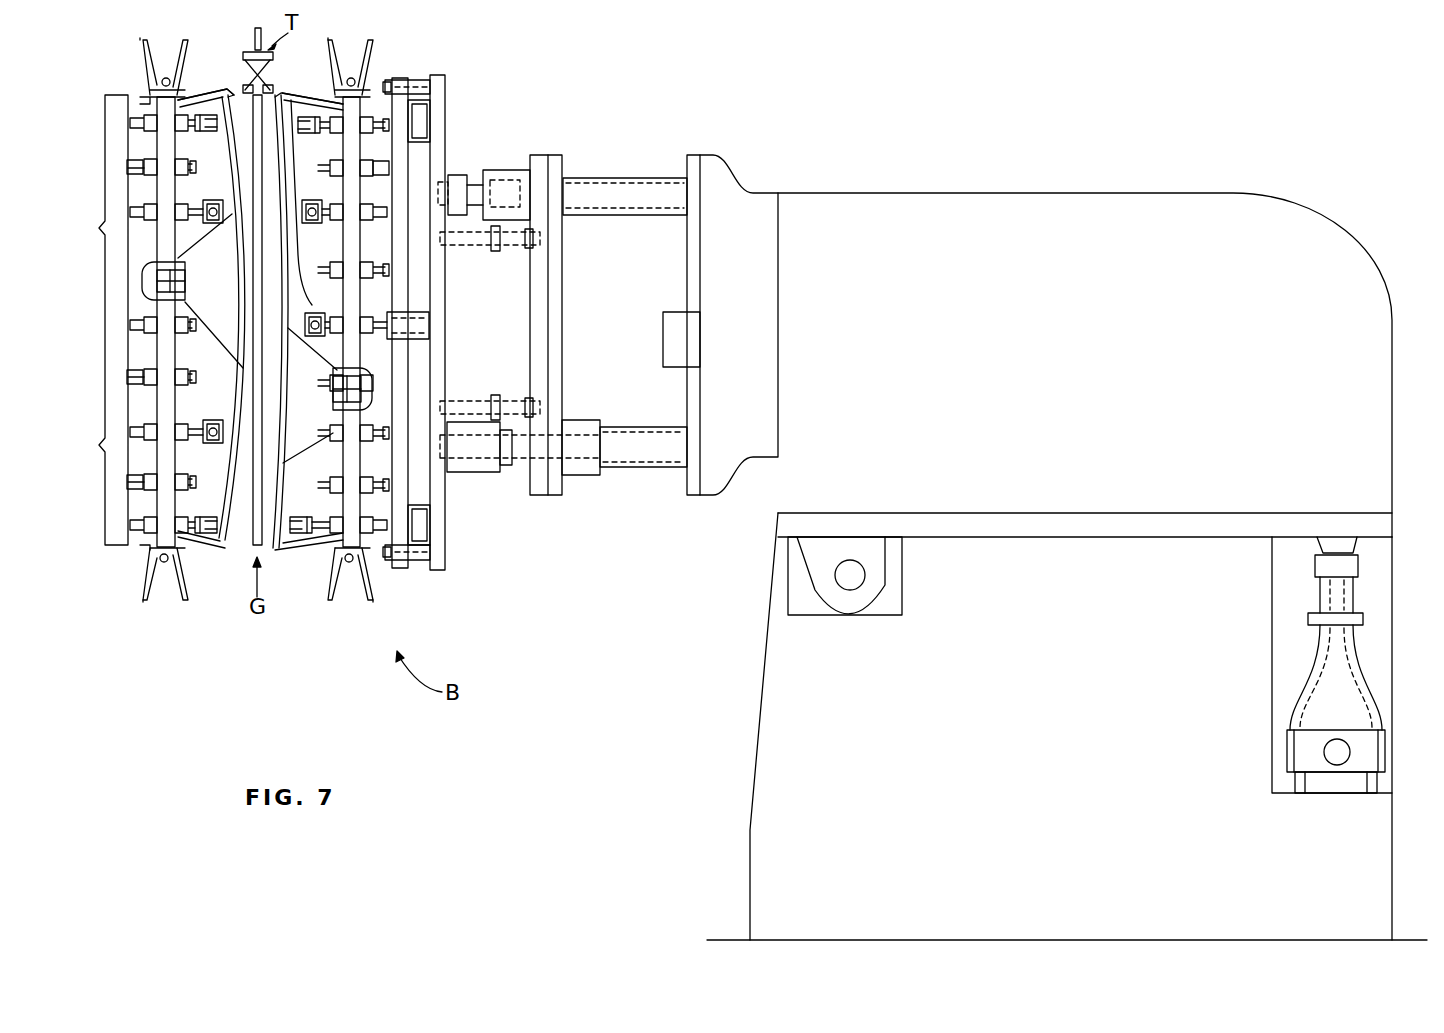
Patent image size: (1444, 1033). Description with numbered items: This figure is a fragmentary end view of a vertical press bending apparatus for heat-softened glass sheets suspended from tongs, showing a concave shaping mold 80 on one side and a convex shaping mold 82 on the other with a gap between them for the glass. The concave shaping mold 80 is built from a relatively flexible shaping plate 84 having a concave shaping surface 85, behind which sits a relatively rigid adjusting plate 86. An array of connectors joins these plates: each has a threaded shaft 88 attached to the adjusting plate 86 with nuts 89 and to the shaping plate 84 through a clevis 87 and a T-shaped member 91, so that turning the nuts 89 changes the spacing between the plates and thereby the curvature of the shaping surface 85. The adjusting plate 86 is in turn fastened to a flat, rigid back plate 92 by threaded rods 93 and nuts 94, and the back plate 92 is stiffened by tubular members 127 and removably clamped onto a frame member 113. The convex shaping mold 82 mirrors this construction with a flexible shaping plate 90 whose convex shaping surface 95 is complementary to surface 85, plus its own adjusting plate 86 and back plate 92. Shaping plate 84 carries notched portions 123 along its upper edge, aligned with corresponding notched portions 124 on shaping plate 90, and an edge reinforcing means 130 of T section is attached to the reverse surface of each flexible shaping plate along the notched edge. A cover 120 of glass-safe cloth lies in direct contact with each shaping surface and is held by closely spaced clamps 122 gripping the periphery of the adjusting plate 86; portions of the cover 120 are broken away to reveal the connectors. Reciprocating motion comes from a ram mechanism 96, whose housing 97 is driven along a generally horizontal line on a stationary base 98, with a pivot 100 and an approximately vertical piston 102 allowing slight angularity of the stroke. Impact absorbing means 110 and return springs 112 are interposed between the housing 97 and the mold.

The concave shaping mold 80 is at (325, 622).
The convex shaping mold 82 is at (165, 620).
The shaping plate 84 is at (275, 550).
The concave shaping surface 85 is at (262, 548).
The adjusting plate 86 is at (158, 237).
The clevis 87 is at (207, 204).
The threaded shaft 88 is at (147, 124).
The nuts 89 is at (365, 128).
The shaping plate 90 is at (233, 565).
The T-shaped member 91 is at (206, 195).
The back plate 92 is at (117, 545).
The threaded rods 93 is at (127, 167).
The nuts 94 is at (165, 172).
The convex shaping surface 95 is at (232, 533).
The ram mechanism 96 is at (705, 665).
The housing 97 is at (1035, 188).
The stationary base 98 is at (751, 762).
The pivot 100 is at (868, 580).
The piston 102 is at (1355, 658).
The impact absorbing means 110 is at (512, 170).
The return springs 112 is at (470, 248).
The frame member 113 is at (448, 355).
The cover 120 is at (232, 278).
The clamps 122 is at (147, 52).
The notched portions 123 is at (283, 93).
The notched portions 124 is at (226, 92).
The tubular members 127 is at (432, 104).
The edge reinforcing means 130 is at (299, 173).